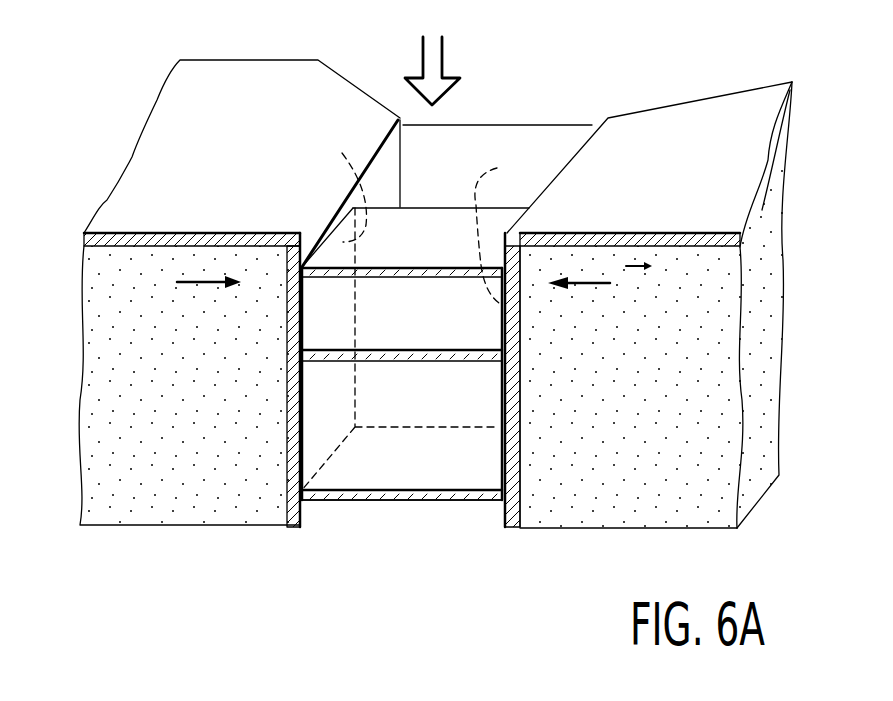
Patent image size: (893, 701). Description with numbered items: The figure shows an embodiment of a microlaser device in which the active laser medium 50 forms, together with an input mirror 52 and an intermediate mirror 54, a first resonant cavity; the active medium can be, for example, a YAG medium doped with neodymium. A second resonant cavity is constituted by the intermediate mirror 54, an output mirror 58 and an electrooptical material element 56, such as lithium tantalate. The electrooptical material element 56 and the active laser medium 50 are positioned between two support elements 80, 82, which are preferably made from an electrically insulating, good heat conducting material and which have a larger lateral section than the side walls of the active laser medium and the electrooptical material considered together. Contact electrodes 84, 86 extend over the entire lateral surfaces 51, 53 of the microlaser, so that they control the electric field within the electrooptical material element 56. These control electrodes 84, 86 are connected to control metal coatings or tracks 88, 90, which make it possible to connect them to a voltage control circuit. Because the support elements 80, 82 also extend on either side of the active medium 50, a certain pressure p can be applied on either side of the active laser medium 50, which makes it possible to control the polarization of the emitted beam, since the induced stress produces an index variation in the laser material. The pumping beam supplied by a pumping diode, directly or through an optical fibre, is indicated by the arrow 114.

The active laser medium 50 is at (399, 346).
The lateral surface 51 is at (502, 228).
The input mirror 52 is at (325, 267).
The lateral surface 53 is at (337, 183).
The intermediate mirror 54 is at (302, 362).
The electrooptical material element 56 is at (358, 483).
The output mirror 58 is at (473, 500).
The support element 80 is at (118, 515).
The support element 82 is at (735, 528).
The contact electrode 84 is at (513, 487).
The contact electrode 86 is at (290, 487).
The control metal coating 88 is at (738, 247).
The control metal coating 90 is at (108, 238).
The pumping beam arrow 114 is at (437, 58).